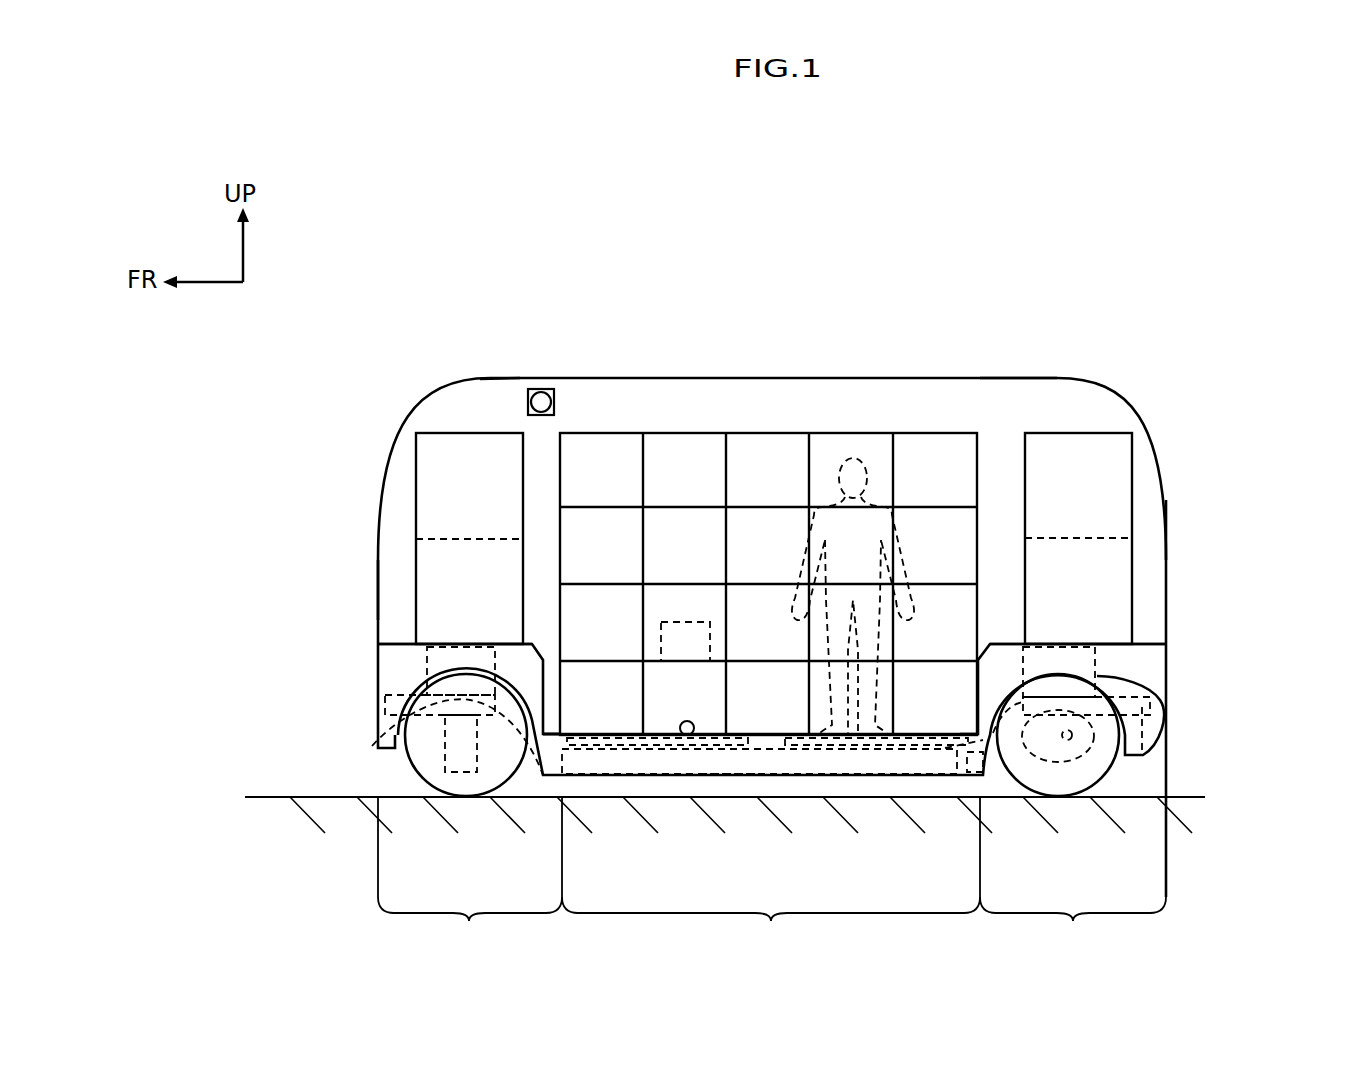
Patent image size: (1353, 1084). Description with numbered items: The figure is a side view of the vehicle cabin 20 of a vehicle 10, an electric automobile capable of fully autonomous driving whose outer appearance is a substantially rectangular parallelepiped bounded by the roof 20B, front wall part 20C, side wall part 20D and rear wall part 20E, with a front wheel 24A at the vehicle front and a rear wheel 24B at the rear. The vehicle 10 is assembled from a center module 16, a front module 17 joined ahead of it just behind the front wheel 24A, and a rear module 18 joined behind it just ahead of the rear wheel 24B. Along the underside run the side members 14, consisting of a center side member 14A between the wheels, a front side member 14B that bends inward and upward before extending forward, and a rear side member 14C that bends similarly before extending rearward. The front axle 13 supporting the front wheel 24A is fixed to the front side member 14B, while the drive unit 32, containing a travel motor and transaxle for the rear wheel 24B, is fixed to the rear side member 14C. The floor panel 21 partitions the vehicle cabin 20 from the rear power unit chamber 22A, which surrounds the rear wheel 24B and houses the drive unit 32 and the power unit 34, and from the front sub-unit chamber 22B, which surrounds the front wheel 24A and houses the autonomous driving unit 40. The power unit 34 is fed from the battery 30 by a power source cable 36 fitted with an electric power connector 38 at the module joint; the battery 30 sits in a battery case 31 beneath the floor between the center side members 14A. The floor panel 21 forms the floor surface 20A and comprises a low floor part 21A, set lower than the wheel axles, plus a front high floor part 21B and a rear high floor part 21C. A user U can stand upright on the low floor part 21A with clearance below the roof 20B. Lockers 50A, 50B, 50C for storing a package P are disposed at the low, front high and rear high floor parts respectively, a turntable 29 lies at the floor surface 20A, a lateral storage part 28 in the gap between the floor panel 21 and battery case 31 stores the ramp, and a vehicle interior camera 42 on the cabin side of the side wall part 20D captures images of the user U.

The vehicle 10 is at (963, 287).
The front axle 13 is at (452, 774).
The side members 14 is at (541, 757).
The center side member 14A is at (960, 773).
The front side member 14B is at (400, 740).
The rear side member 14C is at (1142, 755).
The center module 16 is at (771, 925).
The front module 17 is at (470, 925).
The rear module 18 is at (1073, 925).
The vehicle cabin 20 is at (685, 410).
The floor surface 20A is at (691, 737).
The roof 20B is at (498, 378).
The front wall part 20C is at (380, 590).
The side wall part 20D is at (1000, 402).
The rear wall part 20E is at (1167, 507).
The floor panel 21 is at (597, 730).
The low floor part 21A is at (552, 730).
The front high floor part 21B is at (399, 642).
The rear high floor part 21C is at (1152, 642).
The power unit chamber 22A is at (1132, 673).
The sub-unit chamber 22B is at (403, 675).
The front wheel 24A is at (492, 785).
The rear wheel 24B is at (1058, 785).
The lateral storage part 28 is at (830, 745).
The turntable 29 is at (603, 746).
The battery 30 is at (778, 762).
The battery case 31 is at (737, 774).
The drive unit 32 is at (1075, 753).
The power unit 34 is at (1088, 661).
The power source cable 36 is at (1020, 750).
The electric power connector 38 is at (970, 773).
The autonomous driving unit 40 is at (425, 663).
The vehicle interior camera 42 is at (547, 392).
The locker 50A is at (755, 453).
The locker 50B is at (445, 480).
The locker 50C is at (1088, 463).
The package P is at (688, 622).
The user U is at (842, 465).